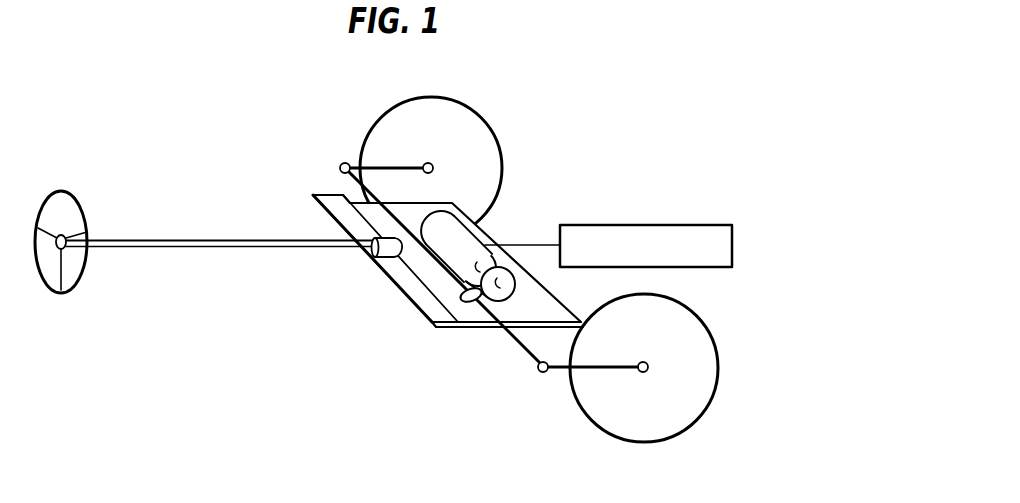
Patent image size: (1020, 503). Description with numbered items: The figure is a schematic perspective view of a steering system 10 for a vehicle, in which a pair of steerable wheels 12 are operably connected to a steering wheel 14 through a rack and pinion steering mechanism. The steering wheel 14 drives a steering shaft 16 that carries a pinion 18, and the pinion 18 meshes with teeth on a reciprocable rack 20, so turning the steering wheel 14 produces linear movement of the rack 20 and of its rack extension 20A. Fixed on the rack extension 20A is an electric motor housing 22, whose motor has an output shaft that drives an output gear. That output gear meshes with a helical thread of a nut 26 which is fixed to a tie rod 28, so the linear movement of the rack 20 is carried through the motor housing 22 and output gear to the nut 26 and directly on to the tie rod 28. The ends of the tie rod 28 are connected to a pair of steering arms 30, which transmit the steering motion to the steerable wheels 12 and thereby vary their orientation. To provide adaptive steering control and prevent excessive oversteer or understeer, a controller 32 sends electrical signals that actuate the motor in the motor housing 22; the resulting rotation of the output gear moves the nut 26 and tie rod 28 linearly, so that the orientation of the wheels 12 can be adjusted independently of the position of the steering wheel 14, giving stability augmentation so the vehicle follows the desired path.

The steering system 10 is at (300, 162).
The steerable wheels 12 is at (497, 138).
The steering wheel 14 is at (82, 213).
The steering shaft 16 is at (183, 240).
The pinion 18 is at (388, 252).
The rack 20 is at (421, 296).
The rack extension 20A is at (490, 232).
The electric motor housing 22 is at (461, 214).
The nut 26 is at (467, 306).
The tie rod 28 is at (522, 348).
The steering arms 30 is at (354, 162).
The controller 32 is at (695, 225).